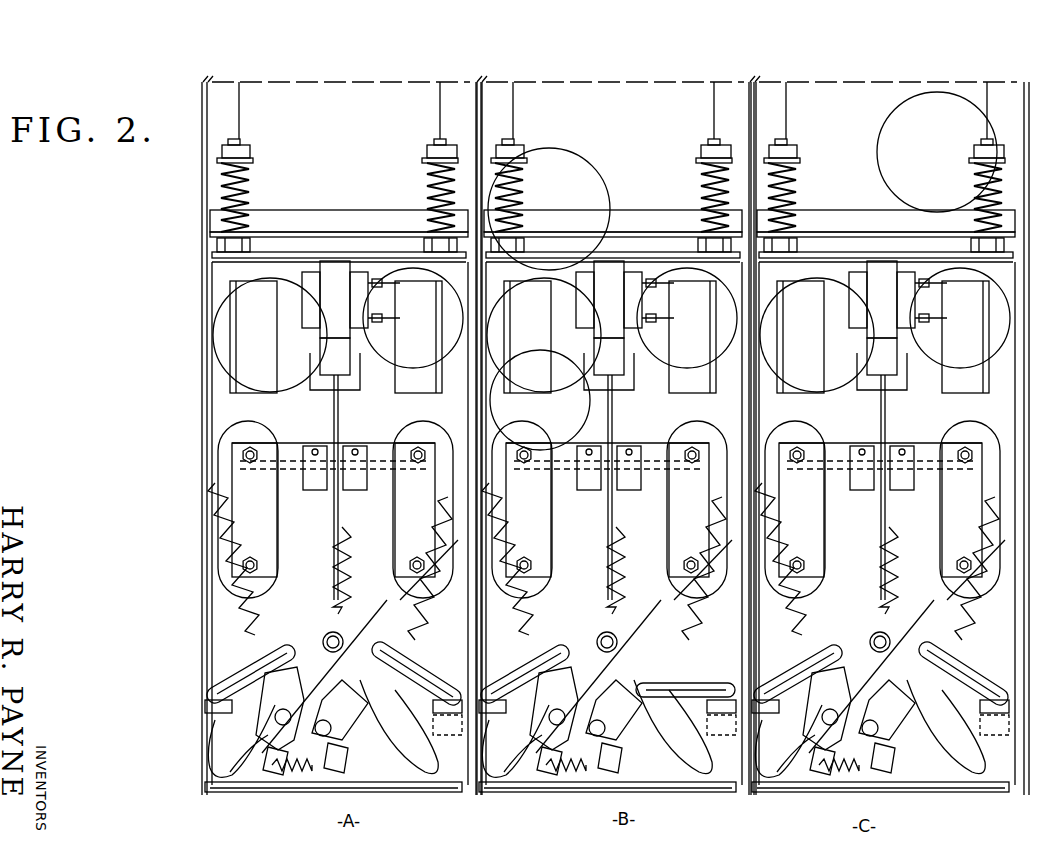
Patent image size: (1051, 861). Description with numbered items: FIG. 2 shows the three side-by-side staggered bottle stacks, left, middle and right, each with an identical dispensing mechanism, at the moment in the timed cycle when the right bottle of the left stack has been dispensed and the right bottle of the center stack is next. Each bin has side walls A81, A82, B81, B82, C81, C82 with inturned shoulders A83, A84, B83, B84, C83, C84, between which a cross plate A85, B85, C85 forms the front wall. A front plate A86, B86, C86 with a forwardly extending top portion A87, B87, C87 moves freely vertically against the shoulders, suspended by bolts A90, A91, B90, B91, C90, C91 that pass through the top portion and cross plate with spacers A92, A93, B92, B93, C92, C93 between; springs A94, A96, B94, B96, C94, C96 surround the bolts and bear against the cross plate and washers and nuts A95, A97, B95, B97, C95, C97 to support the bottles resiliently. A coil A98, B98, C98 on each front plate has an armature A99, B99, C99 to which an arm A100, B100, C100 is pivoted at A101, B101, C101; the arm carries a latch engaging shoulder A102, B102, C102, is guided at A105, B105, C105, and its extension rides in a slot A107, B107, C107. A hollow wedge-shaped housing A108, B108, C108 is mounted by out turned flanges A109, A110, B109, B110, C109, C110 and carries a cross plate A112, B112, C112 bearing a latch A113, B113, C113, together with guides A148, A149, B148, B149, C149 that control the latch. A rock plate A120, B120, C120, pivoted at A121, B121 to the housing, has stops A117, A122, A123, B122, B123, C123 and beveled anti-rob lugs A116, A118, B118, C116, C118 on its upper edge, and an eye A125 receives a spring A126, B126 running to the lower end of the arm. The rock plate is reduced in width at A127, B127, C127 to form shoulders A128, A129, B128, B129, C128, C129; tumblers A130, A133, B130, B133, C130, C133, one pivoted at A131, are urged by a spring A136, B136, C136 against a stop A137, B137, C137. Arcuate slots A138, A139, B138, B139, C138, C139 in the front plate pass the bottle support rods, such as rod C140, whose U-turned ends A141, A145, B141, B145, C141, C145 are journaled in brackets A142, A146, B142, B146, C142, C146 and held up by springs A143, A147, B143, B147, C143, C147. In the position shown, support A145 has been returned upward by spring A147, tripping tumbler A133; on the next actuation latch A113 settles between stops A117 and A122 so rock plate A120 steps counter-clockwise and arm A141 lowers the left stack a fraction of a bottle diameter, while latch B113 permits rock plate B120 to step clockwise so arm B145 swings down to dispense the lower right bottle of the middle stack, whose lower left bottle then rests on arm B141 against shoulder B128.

The frame rail A81 is at (204, 95).
The guide rod A82 is at (440, 121).
The guide rod A83 is at (236, 102).
The guide rod A84 is at (443, 101).
The cross bar A85 is at (347, 212).
The magnet core A86 is at (352, 338).
The support plate A87 is at (310, 262).
The compression spring A90 is at (222, 178).
The compression spring A91 is at (430, 178).
The spring retainer A92 is at (240, 243).
The spring retainer A93 is at (430, 243).
The spring A94 is at (249, 185).
The adjusting nut A95 is at (250, 150).
The spring A96 is at (430, 200).
The adjusting nut A97 is at (428, 155).
The coil A98 is at (302, 274).
The armature A99 is at (320, 358).
The plunger rod A100 is at (340, 403).
The link A101 is at (330, 383).
The contact arm A102 is at (326, 546).
The pin A105 is at (310, 440).
The bracket A107 is at (316, 369).
The pin A108 is at (305, 446).
The contact block A109 is at (232, 445).
The contact block A110 is at (428, 430).
The spring A112 is at (254, 435).
The contact A113 is at (282, 486).
The spring A116 is at (228, 520).
The spring A117 is at (390, 498).
The spring A118 is at (444, 540).
The contact A120 is at (330, 517).
The pivot A121 is at (333, 640).
The lever A122 is at (395, 548).
The contact A123 is at (440, 514).
The spring A125 is at (346, 580).
The spring A126 is at (344, 560).
The toggle link A127 is at (340, 750).
The spring A128 is at (255, 626).
The toggle lever A129 is at (355, 658).
The pawl A130 is at (262, 702).
The pin A131 is at (240, 716).
The arm A133 is at (380, 698).
The spring A136 is at (277, 778).
The spring A137 is at (322, 770).
The arm A138 is at (234, 757).
The arm A139 is at (417, 774).
The lever A141 is at (234, 670).
The block A142 is at (206, 668).
The spring A143 is at (230, 538).
The lever A145 is at (430, 663).
The block A146 is at (440, 714).
The spring A147 is at (424, 606).
The contact A148 is at (285, 500).
The pin A149 is at (375, 440).
The frame rail B81 is at (527, 121).
The guide rod B82 is at (690, 121).
The guide rod B83 is at (528, 122).
The guide rod B84 is at (702, 122).
The cross bar B85 is at (613, 209).
The magnet core B86 is at (625, 306).
The support plate B87 is at (613, 248).
The compression spring B90 is at (532, 197).
The compression spring B91 is at (692, 197).
The spring retainer B92 is at (531, 244).
The spring retainer B93 is at (694, 244).
The spring B94 is at (546, 191).
The adjusting nut B95 is at (547, 140).
The spring B96 is at (678, 194).
The adjusting nut B97 is at (682, 142).
The coil B98 is at (540, 331).
The armature B99 is at (594, 466).
The plunger rod B100 is at (642, 402).
The link B101 is at (578, 397).
The contact arm B102 is at (589, 552).
The pin B105 is at (572, 422).
The bracket B107 is at (570, 369).
The pin B108 is at (570, 432).
The contact block B109 is at (607, 490).
The contact block B110 is at (695, 354).
The spring B112 is at (689, 420).
The contact B113 is at (535, 487).
The spring B118 is at (697, 568).
The contact B120 is at (518, 559).
The pivot B121 is at (624, 632).
The lever B122 is at (637, 516).
The contact B123 is at (637, 531).
The spring B126 is at (635, 570).
The toggle link B127 is at (628, 726).
The spring B128 is at (558, 635).
The toggle lever B129 is at (609, 661).
The pawl B130 is at (541, 721).
The arm B133 is at (673, 727).
The spring B136 is at (557, 785).
The spring B137 is at (632, 774).
The arm B138 is at (515, 741).
The arm B139 is at (692, 730).
The lever B141 is at (525, 667).
The block B142 is at (530, 696).
The spring B143 is at (551, 618).
The lever B145 is at (685, 668).
The block B146 is at (730, 671).
The spring B147 is at (719, 613).
The contact B148 is at (536, 502).
The pin B149 is at (647, 422).
The frame rail C81 is at (796, 122).
The guide rod C82 is at (961, 126).
The guide rod C83 is at (801, 122).
The guide rod C84 is at (970, 122).
The cross bar C85 is at (886, 211).
The magnet core C86 is at (899, 307).
The support plate C87 is at (886, 250).
The compression spring C90 is at (805, 197).
The compression spring C91 is at (966, 197).
The spring retainer C92 is at (805, 248).
The spring retainer C93 is at (969, 248).
The spring C94 is at (819, 197).
The adjusting nut C95 is at (817, 141).
The spring C96 is at (953, 196).
The adjusting nut C97 is at (951, 146).
The coil C98 is at (813, 325).
The armature C99 is at (859, 467).
The plunger rod C100 is at (912, 409).
The link C101 is at (841, 404).
The contact arm C102 is at (908, 570).
The pin C105 is at (839, 428).
The bracket C107 is at (837, 371).
The pin C108 is at (839, 439).
The contact block C109 is at (869, 490).
The contact block C110 is at (965, 355).
The spring C112 is at (960, 424).
The contact C113 is at (806, 489).
The spring C116 is at (792, 559).
The spring C118 is at (972, 567).
The contact C120 is at (964, 519).
The contact C123 is at (964, 489).
The toggle link C127 is at (887, 724).
The pivot C128 is at (879, 633).
The toggle lever C129 is at (885, 667).
The pawl C130 is at (808, 721).
The arm C133 is at (947, 727).
The spring C136 is at (859, 789).
The spring C137 is at (812, 797).
The arm C138 is at (788, 741).
The arm C139 is at (967, 735).
The arm C140 is at (799, 519).
The lever C141 is at (798, 667).
The block C142 is at (805, 699).
The spring C143 is at (825, 624).
The lever C145 is at (964, 673).
The block C146 is at (1000, 673).
The spring C147 is at (990, 616).
The pin C149 is at (915, 428).